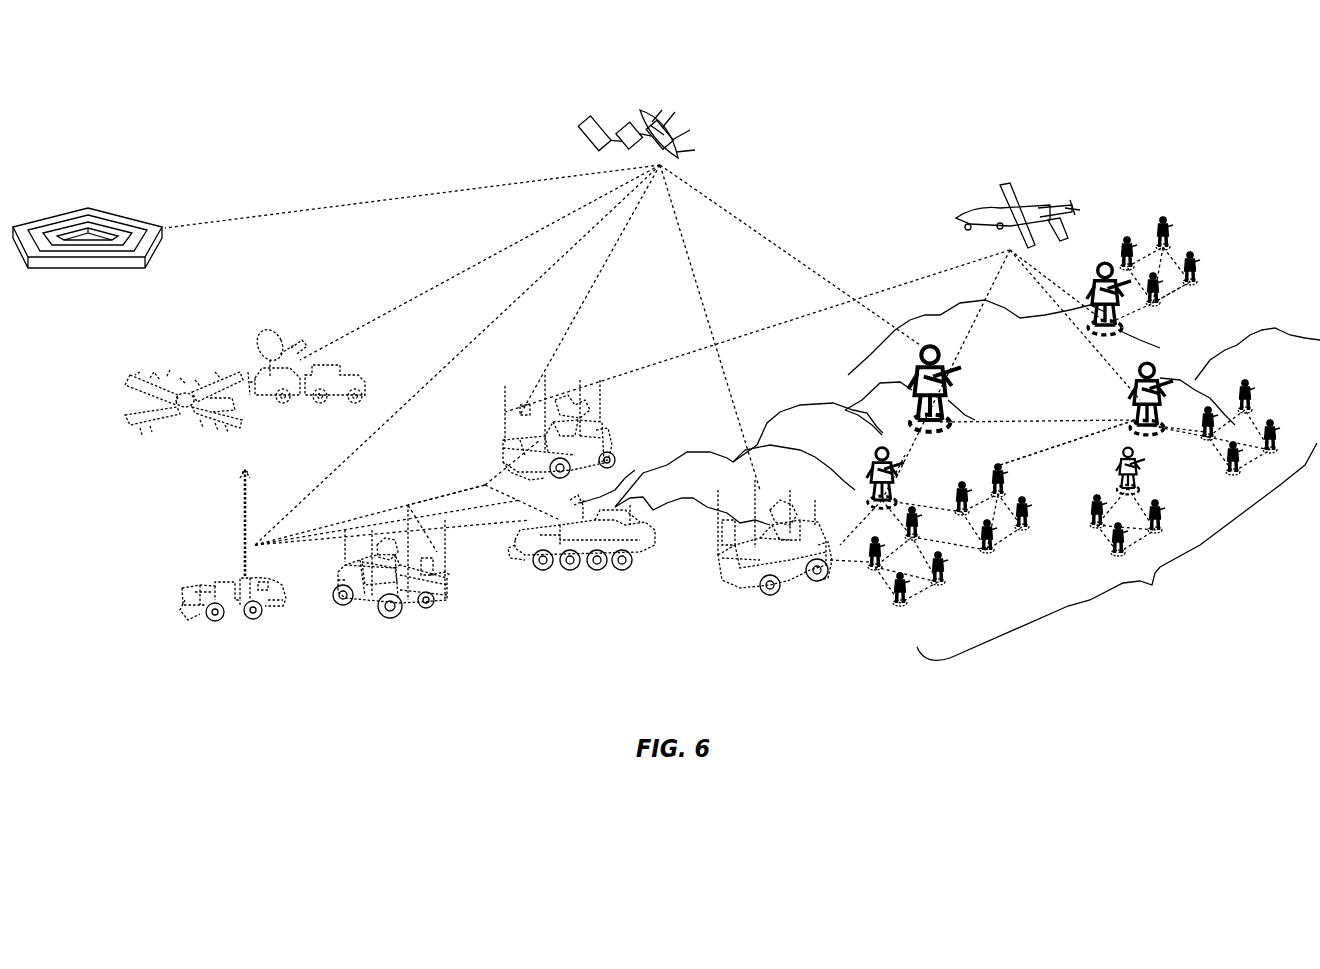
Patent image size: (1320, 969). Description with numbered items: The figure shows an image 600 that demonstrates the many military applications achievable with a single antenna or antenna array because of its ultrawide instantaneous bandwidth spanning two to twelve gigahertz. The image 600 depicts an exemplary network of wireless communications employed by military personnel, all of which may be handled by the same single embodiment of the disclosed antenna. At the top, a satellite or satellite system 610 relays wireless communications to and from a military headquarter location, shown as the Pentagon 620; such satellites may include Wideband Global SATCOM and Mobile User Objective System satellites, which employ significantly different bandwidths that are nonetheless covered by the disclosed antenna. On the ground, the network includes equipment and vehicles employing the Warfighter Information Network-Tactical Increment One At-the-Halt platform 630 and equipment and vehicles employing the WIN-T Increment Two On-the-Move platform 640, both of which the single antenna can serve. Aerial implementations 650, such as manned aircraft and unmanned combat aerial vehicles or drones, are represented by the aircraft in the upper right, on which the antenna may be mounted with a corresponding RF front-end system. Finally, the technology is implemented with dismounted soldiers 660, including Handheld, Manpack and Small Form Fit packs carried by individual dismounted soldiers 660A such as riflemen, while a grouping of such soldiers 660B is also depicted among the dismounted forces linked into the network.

The image 600 is at (1192, 98).
The satellite or satellite system 610 is at (655, 125).
The Pentagon 620 is at (95, 208).
The WIN-T Increment 1 (At-the-Halt) platform 630 is at (298, 325).
The WIN-T Increment 2 (On-the-Move) platform 640 is at (620, 408).
The aerial implementations 650 is at (1000, 182).
The dismounted soldiers 660 is at (1078, 426).
The dismounted soldier / rifleman 660A is at (965, 372).
The soldier squad 660B is at (1192, 218).